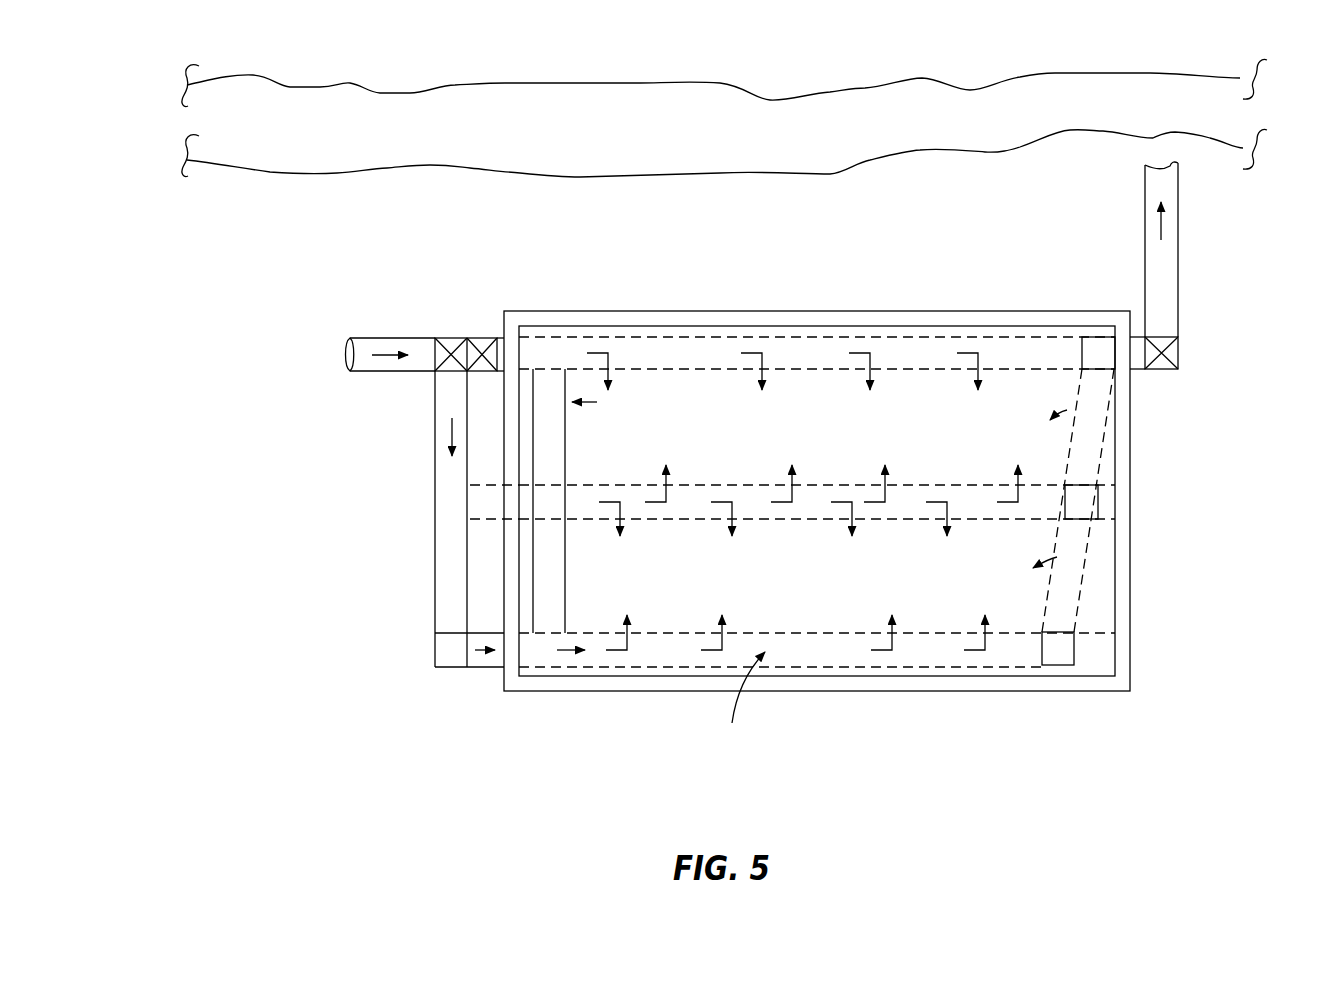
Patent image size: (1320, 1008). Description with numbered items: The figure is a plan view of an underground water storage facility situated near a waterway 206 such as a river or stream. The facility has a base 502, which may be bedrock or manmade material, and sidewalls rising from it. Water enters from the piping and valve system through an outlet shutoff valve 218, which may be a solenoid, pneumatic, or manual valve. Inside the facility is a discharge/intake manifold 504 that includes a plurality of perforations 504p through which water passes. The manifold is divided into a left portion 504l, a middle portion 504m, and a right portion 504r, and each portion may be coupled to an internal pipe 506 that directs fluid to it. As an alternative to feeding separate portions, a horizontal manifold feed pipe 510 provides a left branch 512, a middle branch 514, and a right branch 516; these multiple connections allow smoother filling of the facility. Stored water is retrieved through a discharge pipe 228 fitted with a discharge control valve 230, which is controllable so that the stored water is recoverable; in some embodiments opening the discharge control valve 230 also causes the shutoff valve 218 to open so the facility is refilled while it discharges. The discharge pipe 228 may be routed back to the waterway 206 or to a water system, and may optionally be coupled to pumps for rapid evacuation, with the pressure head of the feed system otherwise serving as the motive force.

The waterway 206 is at (684, 135).
The shutoff valve 218 is at (532, 263).
The discharge pipe 228 is at (1138, 202).
The discharge control valve 230 is at (1187, 343).
The base 502 is at (690, 591).
The discharge/intake manifold 504 is at (538, 617).
The left portion 504l is at (815, 357).
The middle portion 504m is at (913, 498).
The perforations 504p is at (793, 480).
The right portion 504r is at (913, 648).
The internal pipe 506 is at (552, 558).
The horizontal manifold feed pipe 510 is at (445, 557).
The left branch 512 is at (498, 370).
The middle branch 514 is at (485, 500).
The right branch 516 is at (488, 660).